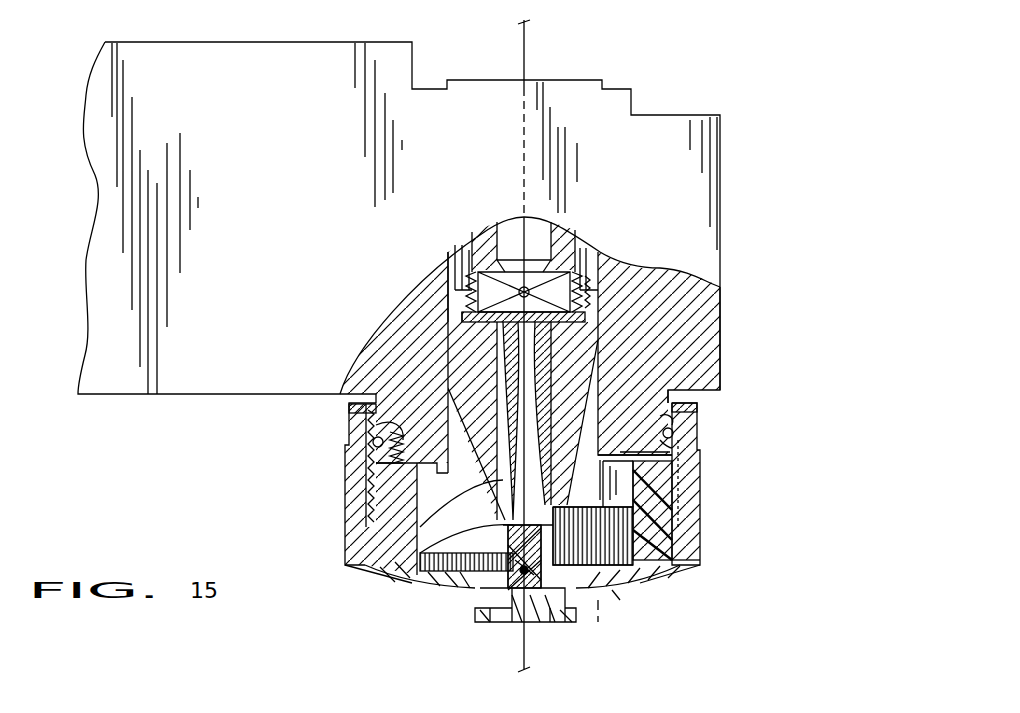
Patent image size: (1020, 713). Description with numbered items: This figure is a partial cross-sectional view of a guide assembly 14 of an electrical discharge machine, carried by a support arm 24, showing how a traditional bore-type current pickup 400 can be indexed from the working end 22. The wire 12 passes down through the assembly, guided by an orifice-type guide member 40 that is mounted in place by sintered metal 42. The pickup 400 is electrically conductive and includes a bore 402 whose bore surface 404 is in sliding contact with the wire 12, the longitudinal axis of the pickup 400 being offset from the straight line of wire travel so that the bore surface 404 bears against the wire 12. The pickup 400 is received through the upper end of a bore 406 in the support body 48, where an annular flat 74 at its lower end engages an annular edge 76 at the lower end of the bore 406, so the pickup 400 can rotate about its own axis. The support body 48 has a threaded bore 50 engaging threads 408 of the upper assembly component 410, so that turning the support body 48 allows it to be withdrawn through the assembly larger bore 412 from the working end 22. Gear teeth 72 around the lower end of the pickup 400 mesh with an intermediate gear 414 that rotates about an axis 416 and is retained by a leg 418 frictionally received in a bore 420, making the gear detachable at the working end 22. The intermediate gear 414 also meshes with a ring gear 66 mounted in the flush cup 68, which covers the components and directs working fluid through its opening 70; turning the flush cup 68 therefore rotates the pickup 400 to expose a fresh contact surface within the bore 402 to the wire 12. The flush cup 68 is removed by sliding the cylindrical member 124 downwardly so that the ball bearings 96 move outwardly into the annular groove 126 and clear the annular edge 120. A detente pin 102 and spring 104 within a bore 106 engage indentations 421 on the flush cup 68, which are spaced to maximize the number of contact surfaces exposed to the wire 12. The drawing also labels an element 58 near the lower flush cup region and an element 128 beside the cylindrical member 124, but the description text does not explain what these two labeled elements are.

The wire 12 is at (530, 44).
The guide assembly 14 is at (720, 96).
The working end 22 is at (253, 455).
The support arm 24 is at (340, 182).
The orifice-type guide member 40 is at (480, 262).
The sintered metal 42 is at (458, 286).
The support body 48 is at (420, 555).
The threaded bore 50 is at (599, 262).
The stem 58 is at (508, 625).
The ring gear 66 is at (490, 596).
The flush cup 68 is at (365, 405).
The opening 70 is at (535, 620).
The gear teeth 72 is at (465, 598).
The annular flat 74 is at (450, 585).
The annular edge 76 is at (440, 560).
The ball bearings 96 is at (690, 440).
The detente pin 102 is at (372, 500).
The spring 104 is at (374, 445).
The bore 106 is at (378, 425).
The annular edge 120 is at (372, 470).
The cylindrical member 124 is at (700, 506).
The annular groove 126 is at (675, 427).
The spring 128 is at (660, 520).
The bore-type current pickup 400 is at (700, 356).
The bore 402 is at (600, 342).
The bore surface 404 is at (650, 330).
The bore 406 is at (716, 382).
The threads 408 is at (710, 288).
The upper assembly component 410 is at (563, 233).
The assembly larger bore 412 is at (460, 318).
The intermediate gear 414 is at (690, 547).
The axis 416 is at (600, 605).
The leg 418 is at (672, 478).
The bore 420 is at (672, 450).
The indentations 421 is at (380, 520).